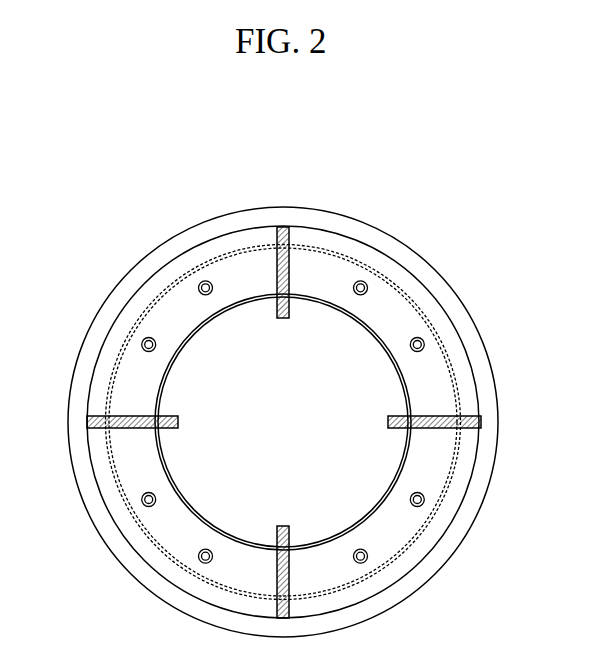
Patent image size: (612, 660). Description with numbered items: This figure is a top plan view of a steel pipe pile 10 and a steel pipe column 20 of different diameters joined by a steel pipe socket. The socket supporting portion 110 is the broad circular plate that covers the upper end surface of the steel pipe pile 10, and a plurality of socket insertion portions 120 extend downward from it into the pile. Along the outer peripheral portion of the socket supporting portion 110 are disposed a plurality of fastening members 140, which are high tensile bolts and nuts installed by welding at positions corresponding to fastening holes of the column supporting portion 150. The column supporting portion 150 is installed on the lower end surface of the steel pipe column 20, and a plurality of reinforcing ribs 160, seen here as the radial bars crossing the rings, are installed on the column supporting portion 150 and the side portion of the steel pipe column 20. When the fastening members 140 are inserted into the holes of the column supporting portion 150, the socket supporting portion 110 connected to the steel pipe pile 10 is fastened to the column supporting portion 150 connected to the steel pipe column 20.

The steel pipe pile 10 is at (108, 380).
The steel pipe column 20 is at (373, 512).
The socket supporting portion 110 is at (451, 294).
The socket insertion portion 120 is at (482, 423).
The fastening member 140 is at (198, 559).
The column supporting portion 150 is at (160, 267).
The reinforcing rib 160 is at (295, 230).